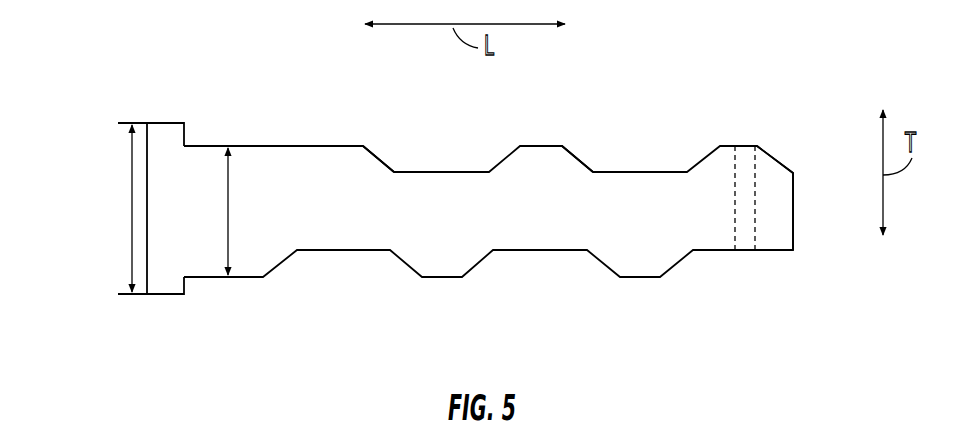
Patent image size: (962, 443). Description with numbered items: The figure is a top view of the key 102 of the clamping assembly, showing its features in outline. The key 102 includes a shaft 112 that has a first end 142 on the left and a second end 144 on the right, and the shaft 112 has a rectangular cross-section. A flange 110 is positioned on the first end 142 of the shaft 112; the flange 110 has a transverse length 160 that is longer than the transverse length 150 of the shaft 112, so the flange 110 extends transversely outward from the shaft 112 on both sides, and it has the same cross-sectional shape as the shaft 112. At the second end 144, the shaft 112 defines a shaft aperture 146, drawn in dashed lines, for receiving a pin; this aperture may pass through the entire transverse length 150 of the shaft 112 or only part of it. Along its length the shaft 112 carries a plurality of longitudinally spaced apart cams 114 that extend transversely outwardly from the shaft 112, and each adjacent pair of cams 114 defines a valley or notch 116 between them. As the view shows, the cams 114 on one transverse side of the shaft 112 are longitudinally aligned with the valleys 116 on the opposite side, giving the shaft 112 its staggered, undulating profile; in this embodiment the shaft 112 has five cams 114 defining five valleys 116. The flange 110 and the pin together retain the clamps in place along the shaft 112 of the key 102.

The key 102 is at (86, 110).
The flange 110 is at (165, 284).
The shaft 112 is at (255, 173).
The cams 114 is at (338, 158).
The valleys 116 is at (453, 138).
The first end 142 is at (197, 246).
The second end 144 is at (778, 205).
The shaft aperture 146 is at (745, 232).
The transverse length 150 is at (228, 213).
The transverse length 160 is at (130, 228).